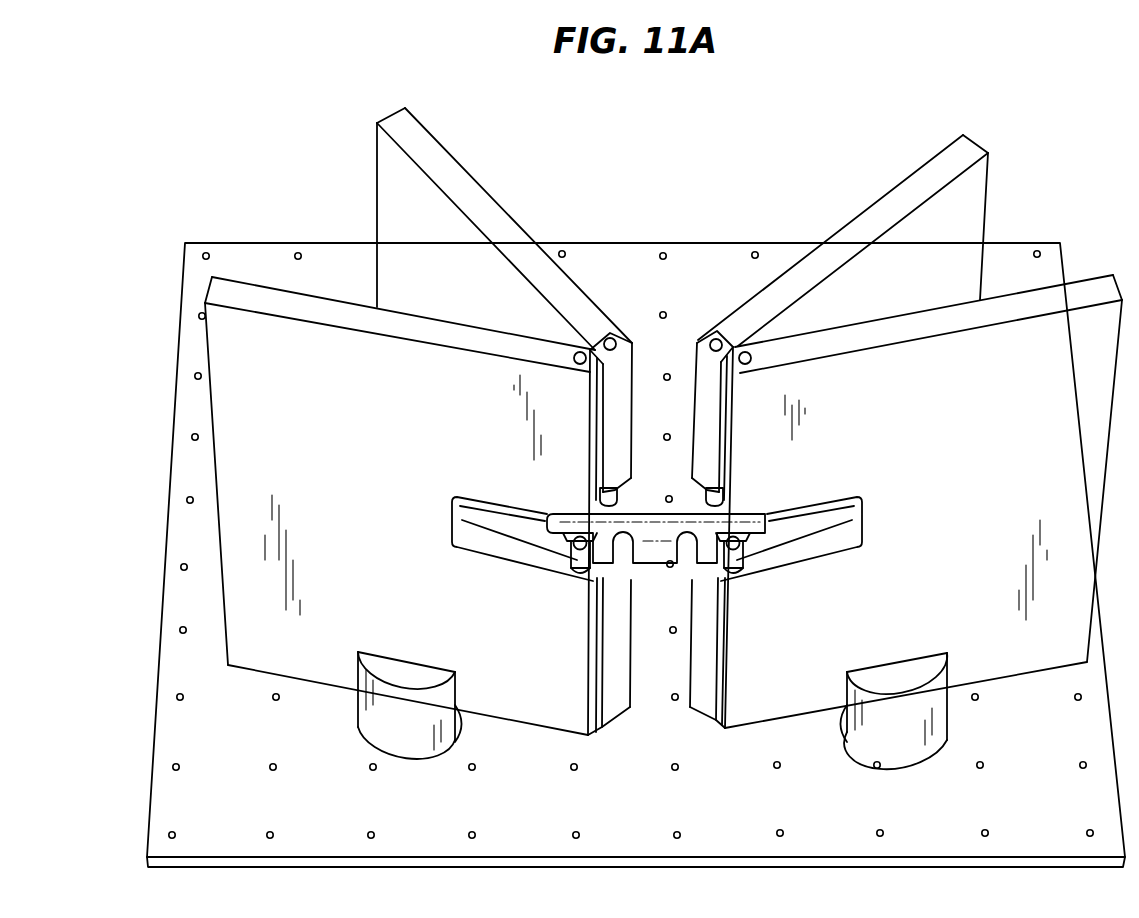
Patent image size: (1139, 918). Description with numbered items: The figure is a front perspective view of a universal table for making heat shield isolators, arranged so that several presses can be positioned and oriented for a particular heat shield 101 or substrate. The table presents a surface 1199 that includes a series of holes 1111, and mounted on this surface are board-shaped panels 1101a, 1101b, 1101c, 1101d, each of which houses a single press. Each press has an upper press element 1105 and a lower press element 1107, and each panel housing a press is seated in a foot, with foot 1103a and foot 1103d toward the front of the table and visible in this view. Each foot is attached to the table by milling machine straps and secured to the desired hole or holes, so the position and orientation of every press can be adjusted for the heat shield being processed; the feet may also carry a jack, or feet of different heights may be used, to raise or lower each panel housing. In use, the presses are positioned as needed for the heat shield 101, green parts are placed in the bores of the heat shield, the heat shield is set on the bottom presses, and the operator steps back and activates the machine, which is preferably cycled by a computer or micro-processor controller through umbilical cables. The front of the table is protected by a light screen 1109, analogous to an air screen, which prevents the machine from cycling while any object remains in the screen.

The heat shield 101 is at (652, 597).
The board-shaped panel 1101a is at (418, 506).
The board-shaped panel 1101b is at (504, 284).
The board-shaped panel 1101c is at (843, 287).
The board-shaped panel 1101d is at (906, 501).
The foot 1103a is at (364, 730).
The foot 1103d is at (947, 712).
The upper press element 1105 is at (706, 477).
The lower press element 1107 is at (577, 583).
The light screen 1109 is at (636, 555).
The holes 1111 is at (192, 435).
The surface 1199 is at (637, 830).